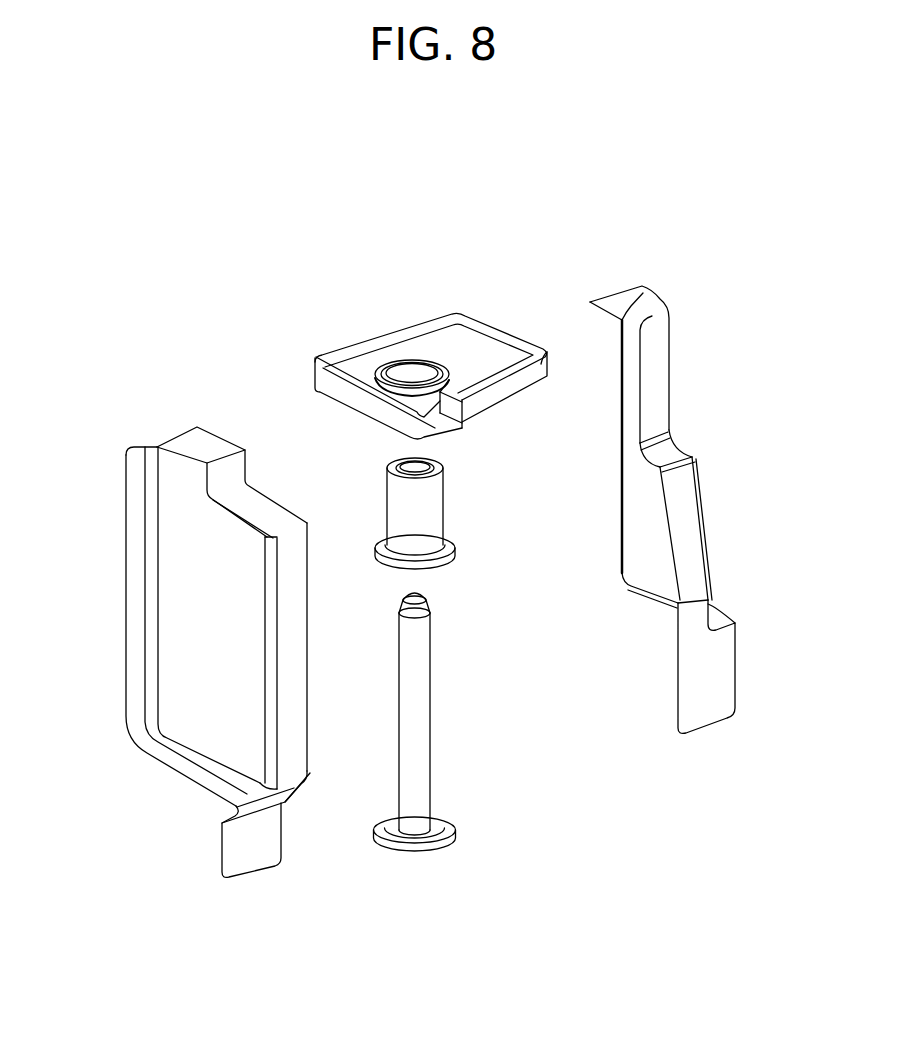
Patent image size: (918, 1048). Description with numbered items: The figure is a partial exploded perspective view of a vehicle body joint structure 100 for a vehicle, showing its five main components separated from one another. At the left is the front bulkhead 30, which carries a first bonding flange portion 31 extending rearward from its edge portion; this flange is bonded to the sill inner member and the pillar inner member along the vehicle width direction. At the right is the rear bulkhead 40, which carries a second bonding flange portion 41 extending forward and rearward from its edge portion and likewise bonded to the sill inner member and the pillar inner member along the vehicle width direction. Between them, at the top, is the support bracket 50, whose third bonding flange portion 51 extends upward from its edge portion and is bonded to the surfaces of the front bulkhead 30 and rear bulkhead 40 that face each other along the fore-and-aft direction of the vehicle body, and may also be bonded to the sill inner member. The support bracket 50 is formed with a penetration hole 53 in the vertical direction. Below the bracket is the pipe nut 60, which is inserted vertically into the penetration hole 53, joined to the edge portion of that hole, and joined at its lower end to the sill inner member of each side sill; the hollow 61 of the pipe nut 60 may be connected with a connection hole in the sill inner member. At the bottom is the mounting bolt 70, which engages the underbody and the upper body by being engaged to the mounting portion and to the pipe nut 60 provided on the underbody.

The vehicle body joint structure 100 is at (399, 172).
The front bulkhead 30 is at (177, 652).
The first bonding flange portion 31 is at (292, 600).
The rear bulkhead 40 is at (694, 507).
The second bonding flange portion 41 is at (647, 287).
The support bracket 50 is at (431, 332).
The third bonding flange portion 51 is at (408, 336).
The penetration hole 53 is at (407, 372).
The pipe nut 60 is at (415, 507).
The hollow 61 is at (410, 466).
The mounting bolt 70 is at (418, 727).